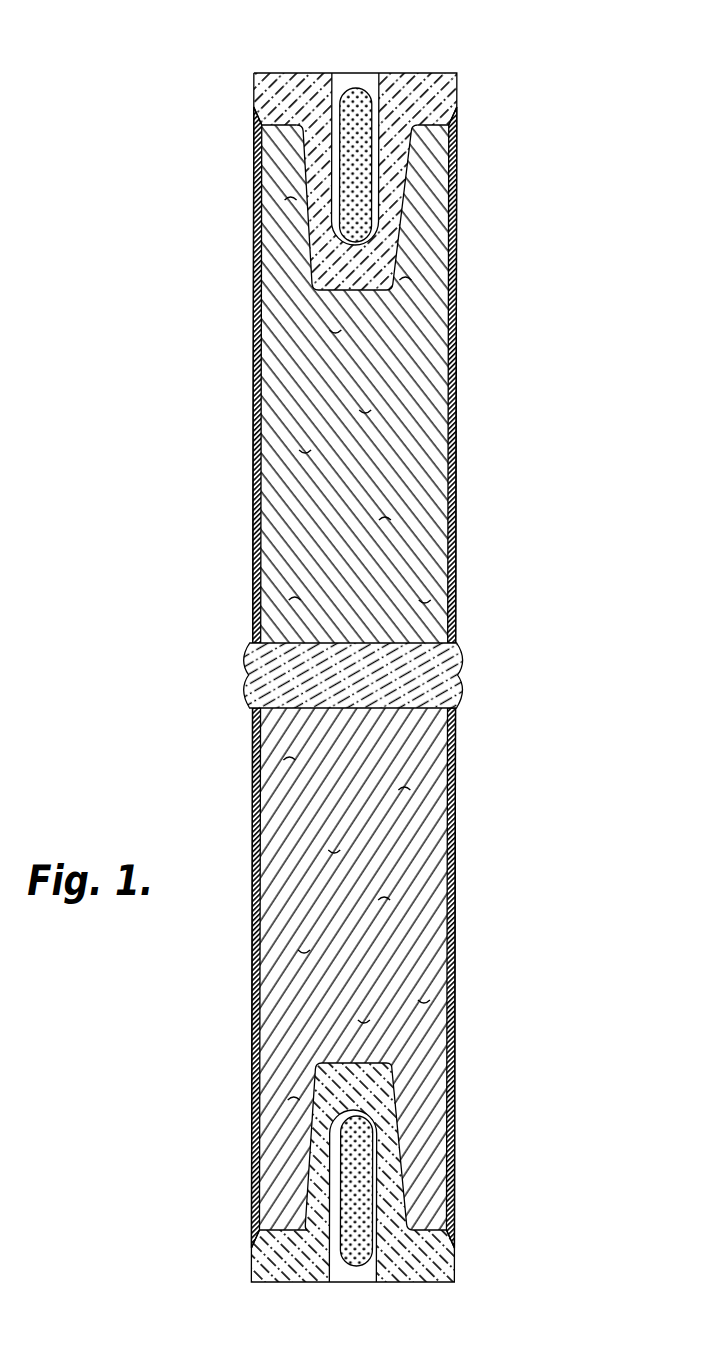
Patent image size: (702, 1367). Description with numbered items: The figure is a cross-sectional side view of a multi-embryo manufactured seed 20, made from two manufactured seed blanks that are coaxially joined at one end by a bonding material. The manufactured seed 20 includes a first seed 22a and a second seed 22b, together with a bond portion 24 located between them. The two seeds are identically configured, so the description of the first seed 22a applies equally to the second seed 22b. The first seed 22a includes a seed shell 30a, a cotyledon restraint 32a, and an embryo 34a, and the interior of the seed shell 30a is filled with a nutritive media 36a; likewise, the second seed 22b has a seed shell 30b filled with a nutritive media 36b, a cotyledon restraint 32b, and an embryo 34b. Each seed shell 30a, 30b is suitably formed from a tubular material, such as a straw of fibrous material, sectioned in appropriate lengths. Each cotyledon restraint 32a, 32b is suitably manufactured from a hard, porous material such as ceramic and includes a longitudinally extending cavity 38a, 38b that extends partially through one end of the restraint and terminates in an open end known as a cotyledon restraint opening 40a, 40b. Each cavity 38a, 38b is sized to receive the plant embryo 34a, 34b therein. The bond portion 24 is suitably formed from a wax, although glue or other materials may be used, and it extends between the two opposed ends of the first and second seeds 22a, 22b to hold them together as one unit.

The manufactured seed 20 is at (499, 578).
The first seed 22a is at (461, 453).
The second seed 22b is at (462, 905).
The bond portion 24 is at (461, 679).
The seed shell 30a is at (454, 351).
The seed shell 30b is at (457, 1007).
The cotyledon restraint 32a is at (392, 246).
The cotyledon restraint 32b is at (398, 1120).
The embryo 34a is at (362, 175).
The embryo 34b is at (365, 1180).
The nutritive media 36a is at (262, 368).
The nutritive media 36b is at (434, 798).
The cavity 38a is at (331, 104).
The cavity 38b is at (332, 1249).
The cotyledon restraint opening 40a is at (378, 68).
The cotyledon restraint opening 40b is at (378, 1282).